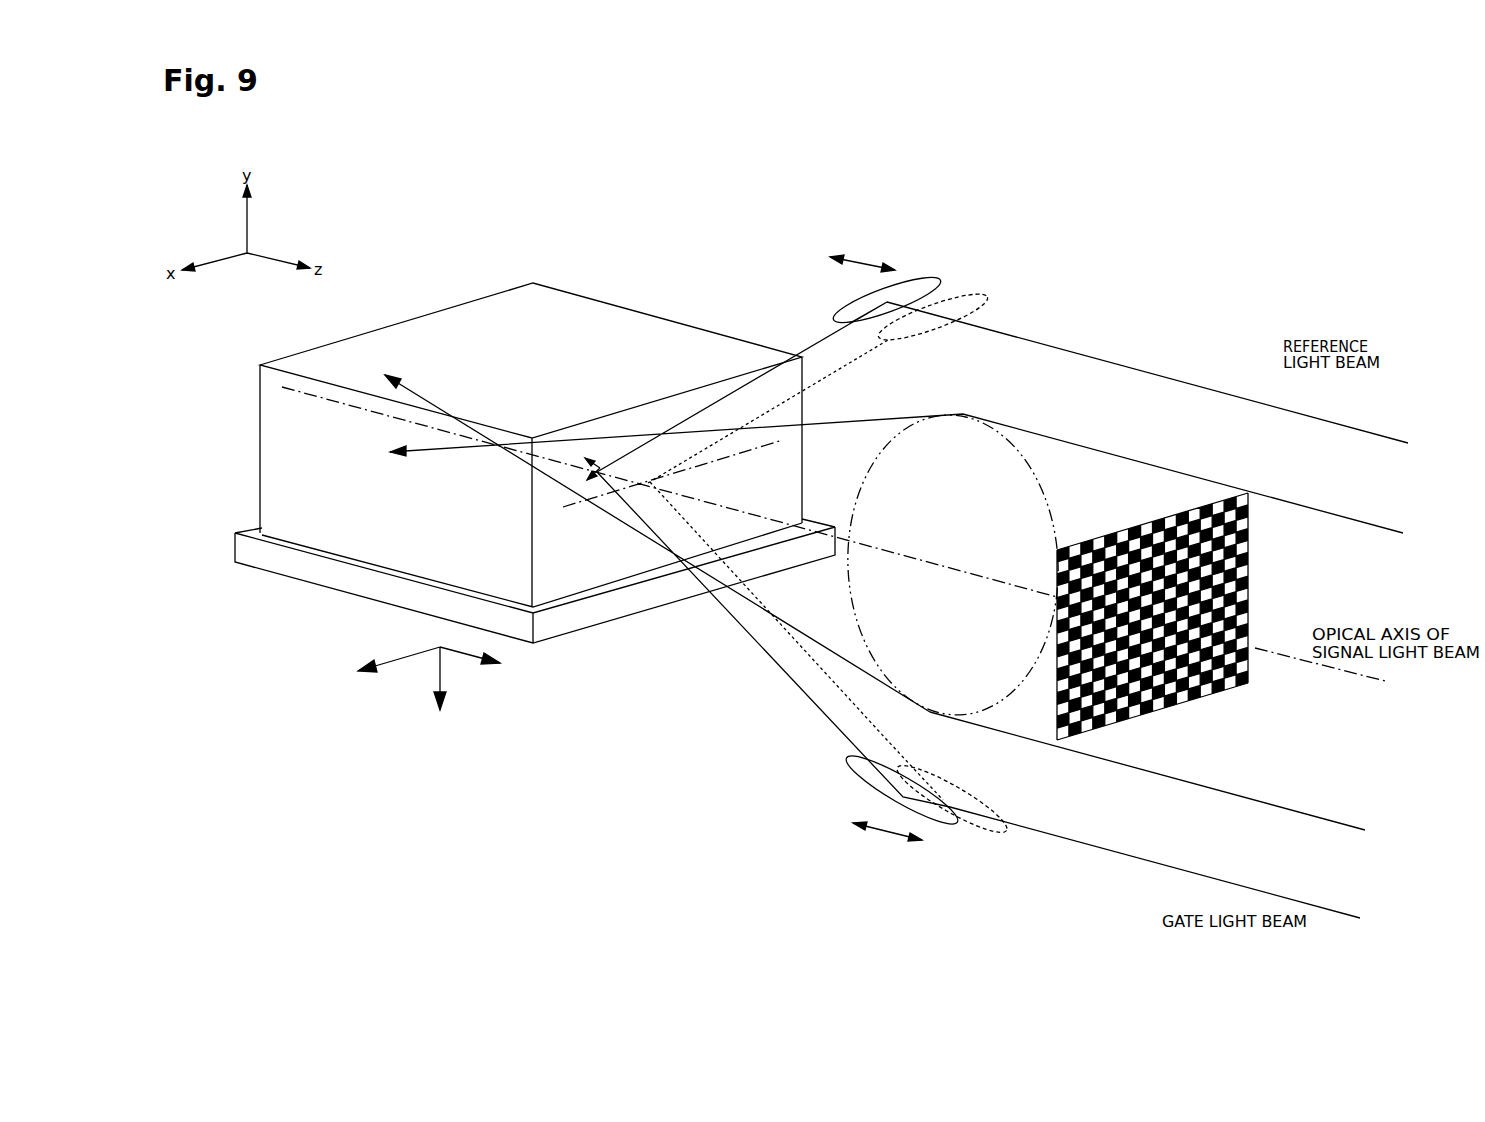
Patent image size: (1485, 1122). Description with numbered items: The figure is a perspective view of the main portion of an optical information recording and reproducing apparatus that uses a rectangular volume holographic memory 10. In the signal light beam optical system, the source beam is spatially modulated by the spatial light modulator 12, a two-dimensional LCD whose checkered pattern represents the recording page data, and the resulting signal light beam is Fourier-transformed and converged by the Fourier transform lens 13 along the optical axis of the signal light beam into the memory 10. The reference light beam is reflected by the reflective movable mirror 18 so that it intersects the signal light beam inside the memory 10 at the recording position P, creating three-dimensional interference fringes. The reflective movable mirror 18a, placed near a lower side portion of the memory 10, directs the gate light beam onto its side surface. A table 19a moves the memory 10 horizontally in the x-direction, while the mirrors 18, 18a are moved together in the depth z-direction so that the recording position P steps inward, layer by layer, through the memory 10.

The volume holographic memory 10 is at (500, 305).
The spatial light modulator 12 is at (1240, 685).
The Fourier transform lens 13 is at (862, 624).
The reflective movable mirror 18 is at (943, 283).
The reflective movable mirror 18a is at (938, 822).
The table 19a is at (297, 570).
The recording position P is at (598, 466).